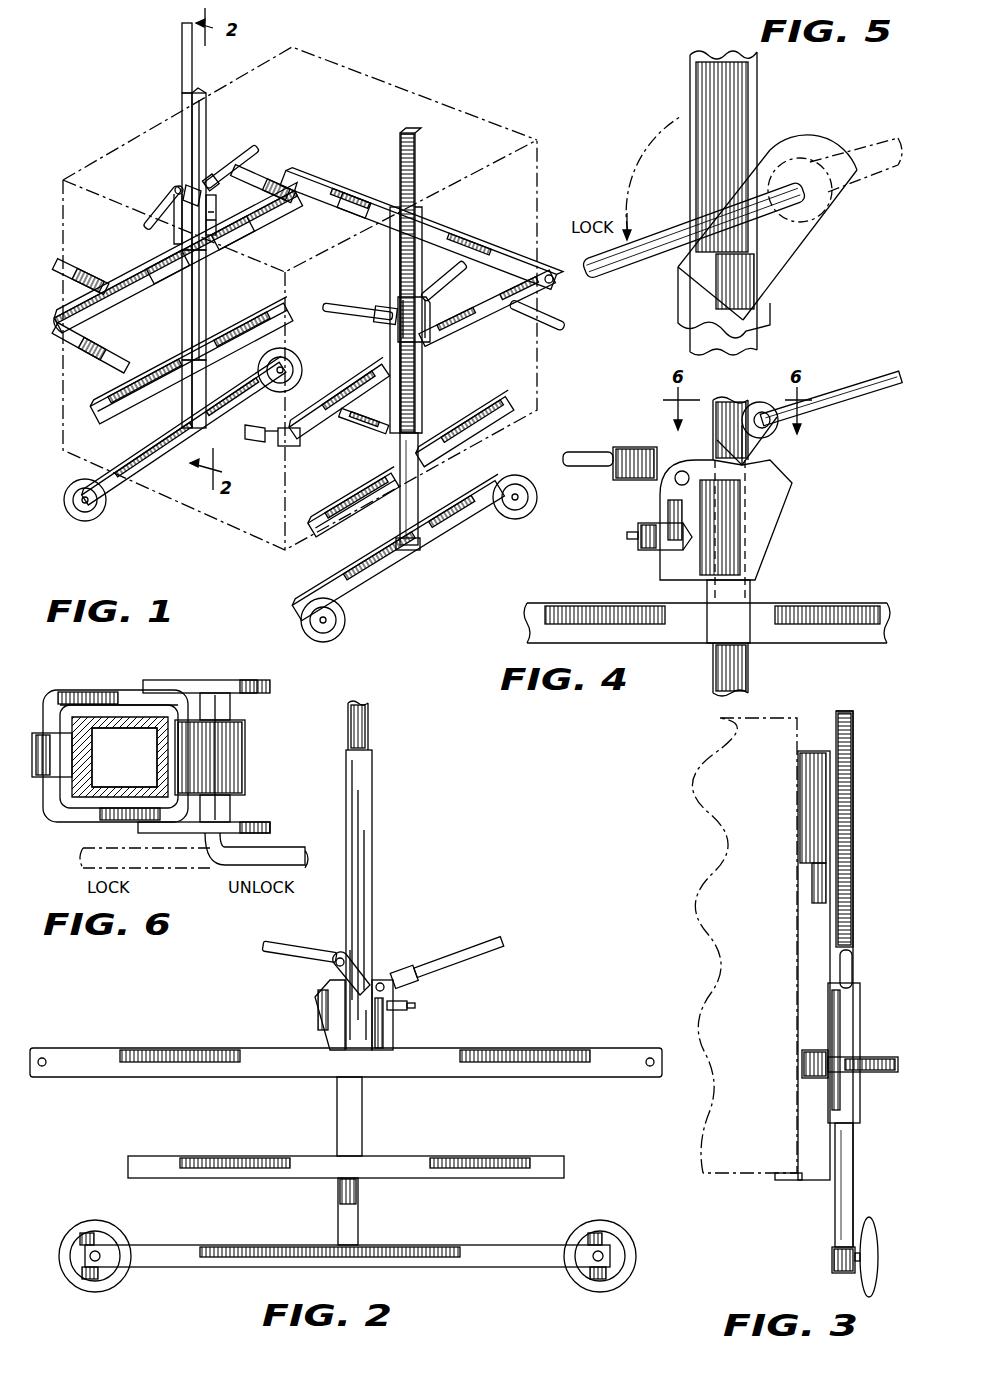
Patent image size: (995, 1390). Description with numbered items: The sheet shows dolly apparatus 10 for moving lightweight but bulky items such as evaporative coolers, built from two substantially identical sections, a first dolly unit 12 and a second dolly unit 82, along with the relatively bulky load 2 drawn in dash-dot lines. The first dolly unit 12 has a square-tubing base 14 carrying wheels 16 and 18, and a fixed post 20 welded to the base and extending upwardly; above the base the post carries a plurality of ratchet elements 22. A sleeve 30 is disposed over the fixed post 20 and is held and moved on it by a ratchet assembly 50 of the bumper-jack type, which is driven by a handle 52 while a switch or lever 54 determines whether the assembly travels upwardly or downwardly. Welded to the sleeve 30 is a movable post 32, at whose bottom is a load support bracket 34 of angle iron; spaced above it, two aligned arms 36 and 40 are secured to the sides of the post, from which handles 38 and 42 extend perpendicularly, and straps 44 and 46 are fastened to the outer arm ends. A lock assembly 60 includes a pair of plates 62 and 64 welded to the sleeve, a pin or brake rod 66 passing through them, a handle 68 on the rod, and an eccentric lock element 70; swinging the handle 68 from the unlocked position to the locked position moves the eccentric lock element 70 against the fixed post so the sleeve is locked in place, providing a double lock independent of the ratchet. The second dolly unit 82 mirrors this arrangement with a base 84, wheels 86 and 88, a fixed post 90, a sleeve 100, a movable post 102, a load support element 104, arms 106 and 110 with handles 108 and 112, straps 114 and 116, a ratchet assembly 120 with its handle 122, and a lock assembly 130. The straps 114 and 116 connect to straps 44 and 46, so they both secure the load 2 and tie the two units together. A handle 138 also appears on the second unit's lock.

In FIG. 1, the load 2 is at (492, 110).
In FIG. 3, the load 2 is at (776, 718).
In FIG. 1, the dolly apparatus 10 is at (184, 136).
In FIG. 2, the dolly apparatus 10 is at (382, 875).
In FIG. 1, the first dolly unit 12 is at (440, 548).
In FIG. 3, the first dolly unit 12 is at (853, 732).
In FIG. 1, the base 14 is at (384, 562).
In FIG. 3, the base 14 is at (832, 1258).
In FIG. 1, the wheel 16 is at (526, 508).
In FIG. 1, the wheel 18 is at (346, 620).
In FIG. 3, the wheel 18 is at (858, 1284).
In FIG. 1, the fixed post 20 is at (413, 504).
In FIG. 5, the fixed post 20 is at (760, 96).
In FIG. 4, the fixed post 20 is at (742, 672).
In FIG. 6, the fixed post 20 is at (114, 798).
In FIG. 3, the fixed post 20 is at (840, 1210).
In FIG. 1, the ratchet elements 22 is at (401, 155).
In FIG. 6, the ratchet elements 22 is at (92, 728).
In FIG. 3, the ratchet elements 22 is at (854, 910).
In FIG. 1, the sleeve 30 is at (424, 395).
In FIG. 4, the sleeve 30 is at (760, 596).
In FIG. 6, the sleeve 30 is at (98, 690).
In FIG. 1, the movable post 32 is at (380, 470).
In FIG. 3, the movable post 32 is at (800, 1125).
In FIG. 1, the load support bracket 34 is at (496, 426).
In FIG. 3, the load support bracket 34 is at (780, 1182).
In FIG. 1, the arm 36 is at (482, 329).
In FIG. 4, the arm 36 is at (822, 602).
In FIG. 1, the handle 38 is at (568, 320).
In FIG. 1, the arm 40 is at (354, 390).
In FIG. 3, the arm 40 is at (800, 1062).
In FIG. 1, the handle 42 is at (348, 430).
In FIG. 3, the handle 42 is at (868, 1056).
In FIG. 1, the strap 44 is at (472, 246).
In FIG. 1, the strap 46 is at (264, 446).
In FIG. 1, the ratchet assembly 50 is at (442, 300).
In FIG. 5, the ratchet assembly 50 is at (770, 316).
In FIG. 4, the ratchet assembly 50 is at (782, 520).
In FIG. 6, the ratchet assembly 50 is at (49, 780).
In FIG. 3, the ratchet assembly 50 is at (866, 1014).
In FIG. 1, the handle 52 is at (362, 309).
In FIG. 4, the handle 52 is at (608, 442).
In FIG. 3, the handle 52 is at (856, 960).
In FIG. 4, the switch or lever 54 is at (651, 552).
In FIG. 5, the lock assembly 60 is at (814, 244).
In FIG. 4, the lock assembly 60 is at (760, 400).
In FIG. 6, the lock assembly 60 is at (193, 680).
In FIG. 5, the plate 62 is at (856, 126).
In FIG. 4, the plate 62 is at (788, 452).
In FIG. 6, the plate 62 is at (248, 822).
In FIG. 6, the plate 64 is at (258, 670).
In FIG. 6, the pin or brake rod 66 is at (234, 712).
In FIG. 1, the handle 68 is at (460, 270).
In FIG. 5, the handle 68 is at (674, 230).
In FIG. 4, the handle 68 is at (868, 382).
In FIG. 6, the handle 68 is at (296, 848).
In FIG. 6, the eccentric lock element 70 is at (248, 760).
In FIG. 1, the second dolly unit 82 is at (196, 72).
In FIG. 2, the second dolly unit 82 is at (373, 856).
In FIG. 1, the base 84 is at (116, 488).
In FIG. 2, the base 84 is at (425, 1262).
In FIG. 1, the wheel 86 is at (300, 362).
In FIG. 2, the wheel 86 is at (628, 1226).
In FIG. 1, the wheel 88 is at (92, 520).
In FIG. 2, the wheel 88 is at (114, 1226).
In FIG. 1, the fixed post 90 is at (194, 390).
In FIG. 2, the fixed post 90 is at (360, 1210).
In FIG. 1, the sleeve 100 is at (176, 298).
In FIG. 1, the movable post 102 is at (206, 298).
In FIG. 2, the movable post 102 is at (360, 1127).
In FIG. 1, the load support element 104 is at (143, 416).
In FIG. 2, the load support element 104 is at (486, 1152).
In FIG. 1, the arm 106 is at (252, 218).
In FIG. 2, the arm 106 is at (502, 1050).
In FIG. 1, the handle 108 is at (280, 166).
In FIG. 1, the arm 110 is at (155, 263).
In FIG. 1, the handle 112 is at (98, 276).
In FIG. 1, the strap 114 is at (354, 204).
In FIG. 1, the strap 116 is at (120, 358).
In FIG. 1, the ratchet assembly 120 is at (208, 202).
In FIG. 2, the ratchet assembly 120 is at (394, 1026).
In FIG. 1, the handle 122 is at (224, 156).
In FIG. 2, the handle 122 is at (489, 958).
In FIG. 1, the lock assembly 130 is at (164, 200).
In FIG. 2, the lock assembly 130 is at (330, 968).
In FIG. 2, the handle 138 is at (312, 940).